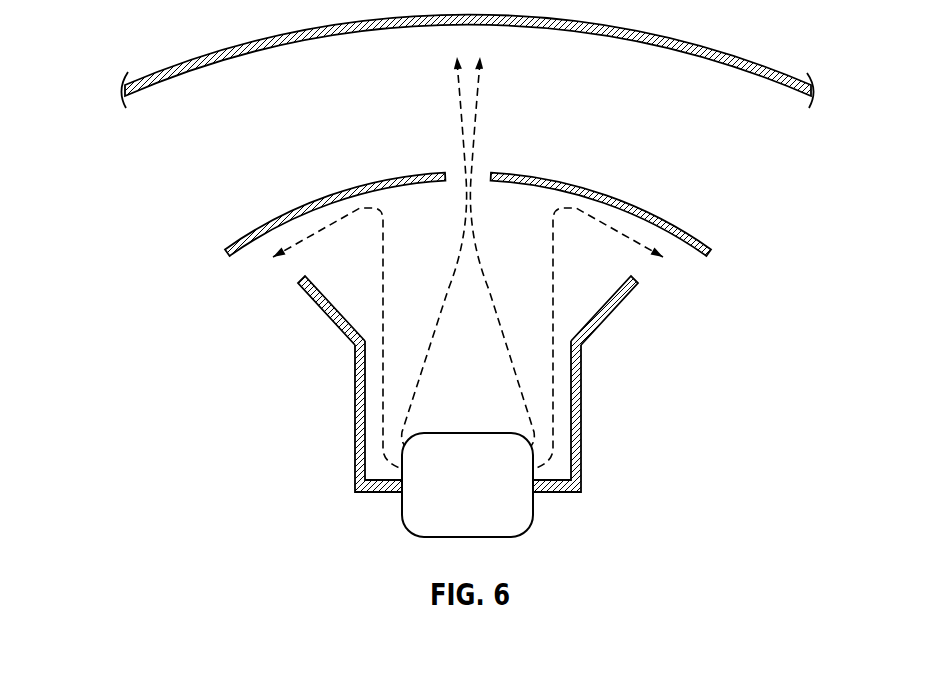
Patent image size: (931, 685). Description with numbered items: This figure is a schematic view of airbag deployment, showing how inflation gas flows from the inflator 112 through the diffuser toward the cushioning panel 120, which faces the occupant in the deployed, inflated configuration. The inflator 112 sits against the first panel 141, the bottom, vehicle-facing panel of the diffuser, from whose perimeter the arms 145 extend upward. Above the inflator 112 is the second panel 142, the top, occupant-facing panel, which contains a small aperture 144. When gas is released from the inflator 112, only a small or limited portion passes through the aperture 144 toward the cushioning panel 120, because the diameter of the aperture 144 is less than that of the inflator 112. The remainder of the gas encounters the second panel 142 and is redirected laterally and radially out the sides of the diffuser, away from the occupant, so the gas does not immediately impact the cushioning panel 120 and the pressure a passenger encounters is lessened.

The cushioning panel 120 is at (673, 40).
The second panel 142 is at (603, 189).
The aperture 144 is at (463, 172).
The arms 145 is at (583, 417).
The first panel 141 is at (565, 493).
The inflator 112 is at (535, 510).